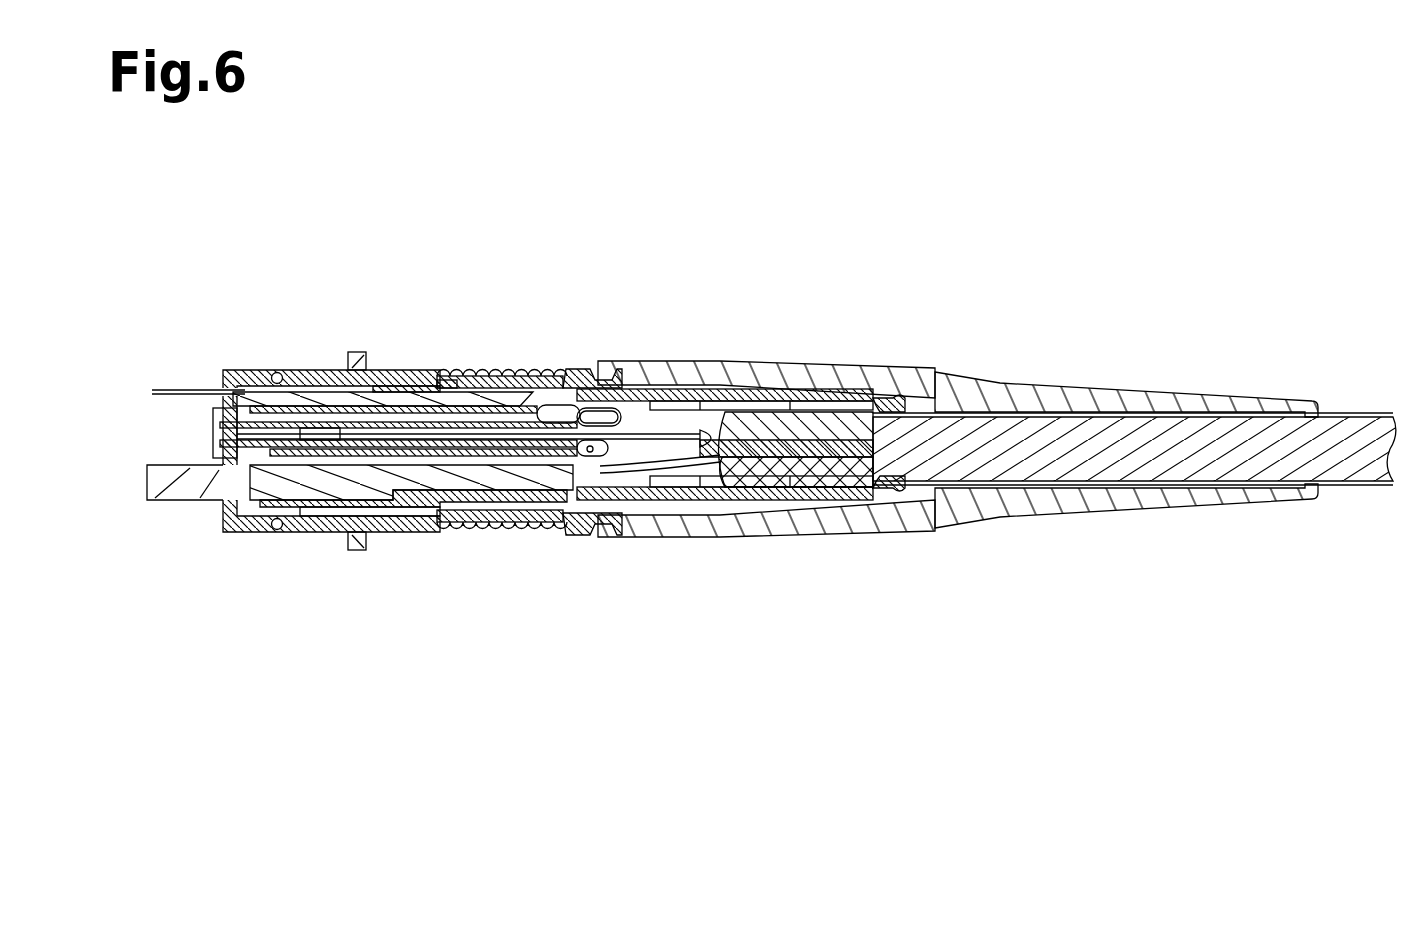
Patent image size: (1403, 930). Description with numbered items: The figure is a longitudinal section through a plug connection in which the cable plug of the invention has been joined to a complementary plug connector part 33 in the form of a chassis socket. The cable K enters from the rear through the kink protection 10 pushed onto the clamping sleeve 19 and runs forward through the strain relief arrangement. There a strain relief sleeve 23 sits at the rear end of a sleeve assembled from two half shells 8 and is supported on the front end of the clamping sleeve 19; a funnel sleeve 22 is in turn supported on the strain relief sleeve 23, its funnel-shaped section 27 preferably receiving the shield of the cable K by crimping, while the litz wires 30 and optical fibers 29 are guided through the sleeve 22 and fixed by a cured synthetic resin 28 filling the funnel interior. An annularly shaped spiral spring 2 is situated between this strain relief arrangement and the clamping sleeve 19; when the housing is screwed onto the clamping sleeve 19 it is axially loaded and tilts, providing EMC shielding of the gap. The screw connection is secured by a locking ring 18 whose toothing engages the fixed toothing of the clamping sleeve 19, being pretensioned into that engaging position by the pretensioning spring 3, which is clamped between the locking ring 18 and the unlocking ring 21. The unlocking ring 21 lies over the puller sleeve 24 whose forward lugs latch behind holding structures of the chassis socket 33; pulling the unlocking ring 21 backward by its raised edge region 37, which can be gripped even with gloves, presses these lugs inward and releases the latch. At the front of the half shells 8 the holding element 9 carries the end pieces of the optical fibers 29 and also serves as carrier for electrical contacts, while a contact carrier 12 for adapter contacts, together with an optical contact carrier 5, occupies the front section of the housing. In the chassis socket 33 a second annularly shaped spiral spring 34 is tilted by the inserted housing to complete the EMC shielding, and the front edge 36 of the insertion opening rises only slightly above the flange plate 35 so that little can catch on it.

The annularly shaped spiral spring 2 is at (892, 383).
The pretensioning spring 3 is at (492, 372).
The optical contact carrier 5 is at (328, 372).
The half shell 8 is at (715, 389).
The holding element 9 is at (463, 474).
The kink protection 10 is at (1008, 373).
The contact carrier 12 is at (333, 500).
The locking ring 18 is at (517, 535).
The clamping sleeve 19 is at (760, 361).
The unlocking ring 21 is at (399, 510).
The funnel sleeve 22 is at (836, 492).
The strain relief sleeve 23 is at (925, 510).
The puller sleeve 24 is at (402, 372).
The funnel-shaped section 27 is at (769, 493).
The cured synthetic resin 28 is at (722, 478).
The optical fibers 29 is at (660, 389).
The litz wires 30 is at (649, 505).
The complementary plug connector part 33 is at (347, 342).
The annularly shaped spiral spring 34 is at (259, 371).
The flange plate 35 is at (352, 545).
The front edge 36 is at (378, 530).
The edge region of the unlocking ring 37 is at (458, 372).
The cable K is at (1113, 447).